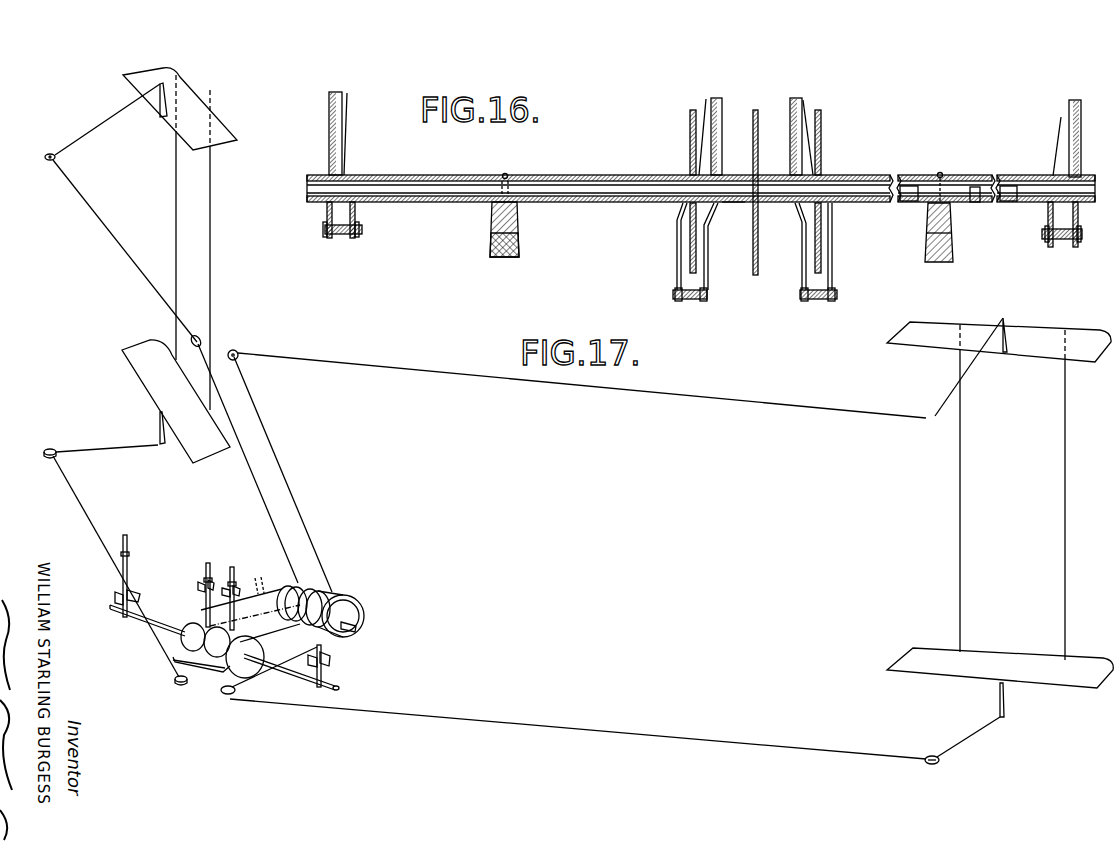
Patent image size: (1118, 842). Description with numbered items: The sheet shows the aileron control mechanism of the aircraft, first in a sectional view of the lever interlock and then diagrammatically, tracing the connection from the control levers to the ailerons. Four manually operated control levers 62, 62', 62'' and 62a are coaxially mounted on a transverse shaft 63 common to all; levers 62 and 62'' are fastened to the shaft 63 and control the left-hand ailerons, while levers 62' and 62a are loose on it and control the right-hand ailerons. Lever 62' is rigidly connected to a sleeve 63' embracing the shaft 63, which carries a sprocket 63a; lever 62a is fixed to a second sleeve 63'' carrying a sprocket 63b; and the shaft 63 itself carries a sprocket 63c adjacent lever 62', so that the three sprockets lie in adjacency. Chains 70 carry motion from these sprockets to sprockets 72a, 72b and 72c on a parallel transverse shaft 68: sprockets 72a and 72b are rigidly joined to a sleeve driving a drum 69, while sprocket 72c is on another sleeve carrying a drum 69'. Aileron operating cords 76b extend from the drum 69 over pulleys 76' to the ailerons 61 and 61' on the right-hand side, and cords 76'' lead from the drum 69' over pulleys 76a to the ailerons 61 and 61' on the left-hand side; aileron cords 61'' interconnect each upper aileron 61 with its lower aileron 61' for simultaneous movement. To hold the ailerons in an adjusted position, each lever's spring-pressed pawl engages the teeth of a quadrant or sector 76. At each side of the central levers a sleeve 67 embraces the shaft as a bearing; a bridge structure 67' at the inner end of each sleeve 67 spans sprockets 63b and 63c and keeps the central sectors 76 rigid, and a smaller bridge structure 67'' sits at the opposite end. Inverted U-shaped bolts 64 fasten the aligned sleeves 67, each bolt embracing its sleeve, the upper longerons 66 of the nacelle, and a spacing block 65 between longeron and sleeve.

In FIG. 17, the aileron 61 is at (617, 215).
In FIG. 17, the aileron 61' is at (596, 528).
In FIG. 17, the aileron cords 61'' is at (620, 367).
In FIG. 16, the control lever 62 is at (355, 133).
In FIG. 17, the control lever 62 is at (140, 563).
In FIG. 16, the control lever 62' is at (726, 120).
In FIG. 17, the control lever 62' is at (220, 579).
In FIG. 16, the control lever 62'' is at (824, 125).
In FIG. 17, the control lever 62'' is at (255, 572).
In FIG. 16, the control lever 62a is at (1063, 116).
In FIG. 17, the control lever 62a is at (328, 652).
In FIG. 16, the shaft 63 is at (701, 176).
In FIG. 17, the shaft 63 is at (237, 675).
In FIG. 16, the sleeve 63' is at (731, 225).
In FIG. 16, the sleeve 63'' is at (968, 198).
In FIG. 16, the sprocket 63a is at (760, 118).
In FIG. 17, the sprocket 63a is at (208, 660).
In FIG. 16, the sprocket 63b is at (821, 133).
In FIG. 17, the sprocket 63b is at (228, 676).
In FIG. 16, the sprocket 63c is at (692, 127).
In FIG. 17, the sprocket 63c is at (190, 652).
In FIG. 16, the inverted U-shaped bolt 64 is at (507, 175).
In FIG. 16, the spacing block 65 is at (517, 222).
In FIG. 16, the upper longeron 66 is at (512, 250).
In FIG. 16, the sleeve 67 is at (701, 170).
In FIG. 16, the bridge structure 67' is at (754, 252).
In FIG. 16, the bridge structure 67'' is at (364, 220).
In FIG. 17, the shaft 68 is at (357, 626).
In FIG. 17, the drum 69 is at (375, 595).
In FIG. 17, the drum 69' is at (291, 597).
In FIG. 17, the chain 70 is at (267, 574).
In FIG. 17, the sprocket 72a is at (315, 588).
In FIG. 17, the sprocket 72b is at (352, 615).
In FIG. 17, the sprocket 72c is at (286, 598).
In FIG. 16, the quadrant or sector 76 is at (701, 182).
In FIG. 17, the quadrant or sector 76 is at (528, 420).
In FIG. 17, the pulley 76' is at (600, 559).
In FIG. 17, the aileron operating cords 76'' is at (185, 371).
In FIG. 17, the pulley 76a is at (56, 157).
In FIG. 17, the aileron operating cords 76b is at (735, 402).